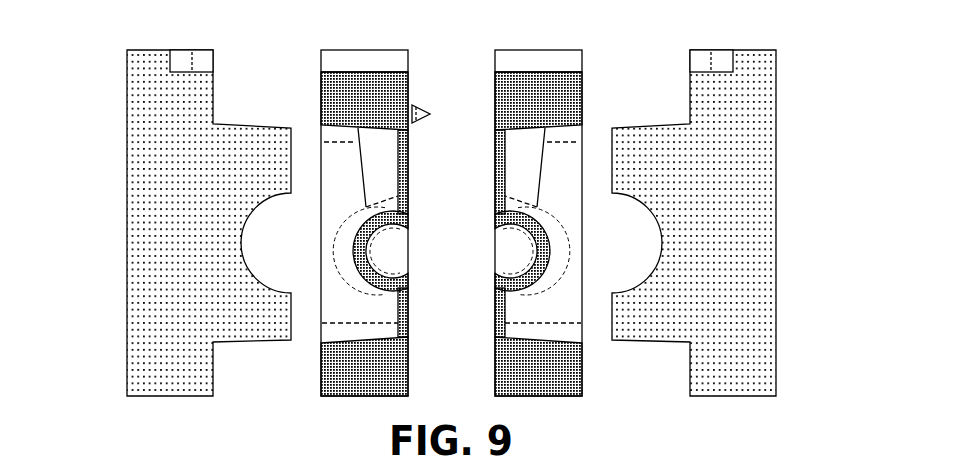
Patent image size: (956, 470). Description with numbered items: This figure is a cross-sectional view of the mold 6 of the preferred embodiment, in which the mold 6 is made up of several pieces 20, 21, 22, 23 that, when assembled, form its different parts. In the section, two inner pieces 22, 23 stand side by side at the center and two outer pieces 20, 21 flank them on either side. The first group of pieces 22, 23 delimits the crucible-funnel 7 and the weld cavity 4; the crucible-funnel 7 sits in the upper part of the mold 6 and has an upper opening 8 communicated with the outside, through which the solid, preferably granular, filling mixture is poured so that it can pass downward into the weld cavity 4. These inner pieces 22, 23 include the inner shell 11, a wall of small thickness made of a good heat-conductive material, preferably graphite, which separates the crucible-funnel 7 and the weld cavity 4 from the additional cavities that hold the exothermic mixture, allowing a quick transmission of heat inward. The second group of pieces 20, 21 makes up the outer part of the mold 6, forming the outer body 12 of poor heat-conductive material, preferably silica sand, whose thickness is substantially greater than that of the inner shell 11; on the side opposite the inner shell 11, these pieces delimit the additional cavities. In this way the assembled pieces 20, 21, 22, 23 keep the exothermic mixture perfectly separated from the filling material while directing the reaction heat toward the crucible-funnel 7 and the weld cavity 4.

The weld cavity 4 is at (536, 243).
The mold 6 is at (444, 198).
The crucible-funnel 7 is at (382, 161).
The upper opening 8 is at (408, 100).
The inner shell 11 is at (504, 181).
The outer body 12 is at (444, 198).
The piece 20 is at (152, 83).
The piece 21 is at (752, 85).
The piece 22 is at (343, 62).
The piece 23 is at (553, 61).